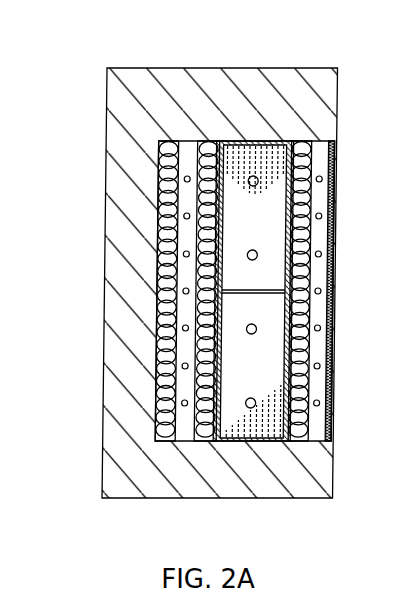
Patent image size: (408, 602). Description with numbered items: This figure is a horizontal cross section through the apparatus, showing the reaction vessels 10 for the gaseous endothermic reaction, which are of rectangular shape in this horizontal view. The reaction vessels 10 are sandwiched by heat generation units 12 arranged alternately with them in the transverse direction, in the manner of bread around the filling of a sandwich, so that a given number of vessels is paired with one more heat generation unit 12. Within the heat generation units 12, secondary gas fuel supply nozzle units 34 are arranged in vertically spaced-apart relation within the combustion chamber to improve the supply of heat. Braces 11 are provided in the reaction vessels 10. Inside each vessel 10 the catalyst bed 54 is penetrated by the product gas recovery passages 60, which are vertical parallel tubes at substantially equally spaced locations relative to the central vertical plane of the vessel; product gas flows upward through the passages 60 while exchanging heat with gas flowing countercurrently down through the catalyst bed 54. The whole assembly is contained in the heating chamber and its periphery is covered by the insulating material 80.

The heating chamber / insulating material 80 is at (222, 94).
The secondary gas fuel supply nozzle units 34 is at (160, 200).
The product gas recovery passages 60 is at (247, 254).
The braces 11 is at (243, 293).
The heat generation units 12 is at (158, 402).
The reaction vessels 10 is at (197, 410).
The catalyst bed 54 is at (224, 442).